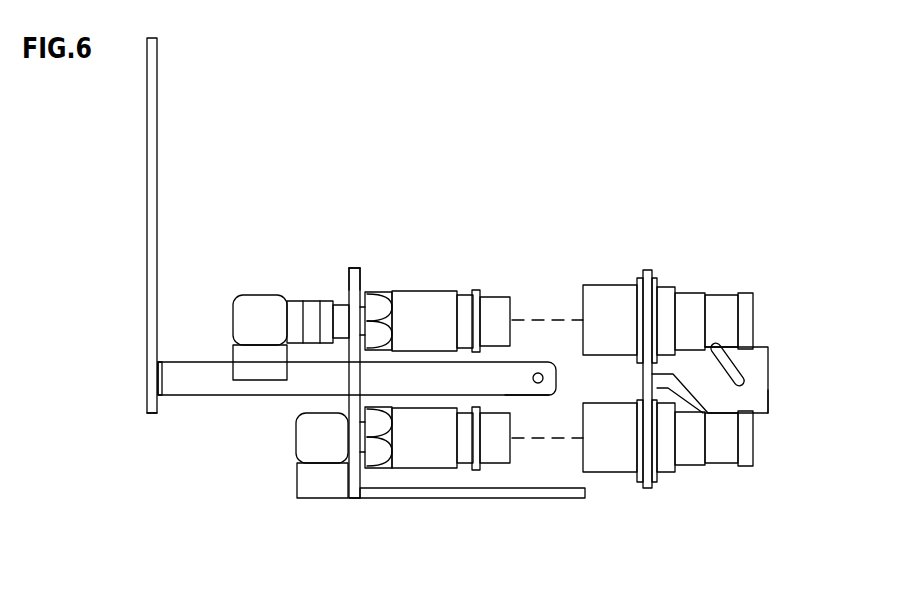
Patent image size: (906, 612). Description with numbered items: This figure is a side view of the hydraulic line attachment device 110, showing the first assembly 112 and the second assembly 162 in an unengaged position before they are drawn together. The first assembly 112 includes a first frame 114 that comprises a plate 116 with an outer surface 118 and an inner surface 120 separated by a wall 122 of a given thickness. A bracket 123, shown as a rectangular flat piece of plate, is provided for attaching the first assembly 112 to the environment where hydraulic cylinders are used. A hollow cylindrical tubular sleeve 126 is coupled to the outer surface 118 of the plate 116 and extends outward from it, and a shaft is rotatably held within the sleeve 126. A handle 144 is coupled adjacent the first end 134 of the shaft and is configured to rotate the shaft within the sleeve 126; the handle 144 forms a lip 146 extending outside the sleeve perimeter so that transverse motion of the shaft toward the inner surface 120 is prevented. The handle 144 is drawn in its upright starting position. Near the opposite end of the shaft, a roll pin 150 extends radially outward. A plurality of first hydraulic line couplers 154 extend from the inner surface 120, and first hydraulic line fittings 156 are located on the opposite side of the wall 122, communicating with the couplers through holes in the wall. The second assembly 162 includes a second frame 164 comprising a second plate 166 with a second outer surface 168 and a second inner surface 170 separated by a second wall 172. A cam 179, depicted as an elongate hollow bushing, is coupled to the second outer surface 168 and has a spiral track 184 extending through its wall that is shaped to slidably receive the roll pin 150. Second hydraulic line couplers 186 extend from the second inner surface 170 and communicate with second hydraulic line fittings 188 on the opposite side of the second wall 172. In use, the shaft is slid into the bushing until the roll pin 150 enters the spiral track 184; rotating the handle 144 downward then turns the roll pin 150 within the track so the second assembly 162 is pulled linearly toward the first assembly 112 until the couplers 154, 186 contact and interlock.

The hydraulic line attachment device 110 is at (624, 548).
The first assembly 112 is at (458, 515).
The first frame 114 is at (353, 267).
The plate 116 is at (352, 486).
The outer surface 118 is at (354, 383).
The inner surface 120 is at (361, 272).
The wall 122 is at (356, 270).
The bracket 123 is at (543, 498).
The sleeve 126 is at (220, 396).
The first end 134 is at (160, 361).
The handle 144 is at (156, 73).
The lip 146 is at (158, 405).
The roll pin 150 is at (542, 370).
The first hydraulic line couplers 154 is at (497, 430).
The first hydraulic line fittings 156 is at (258, 373).
The second assembly 162 is at (708, 493).
The second frame 164 is at (653, 273).
The second plate 166 is at (648, 272).
The second outer surface 168 is at (653, 487).
The second inner surface 170 is at (642, 487).
The second wall 172 is at (651, 377).
The cam 179 is at (520, 393).
The spiral track 184 is at (736, 368).
The second hydraulic line couplers 186 is at (627, 413).
The second hydraulic line fittings 188 is at (715, 303).